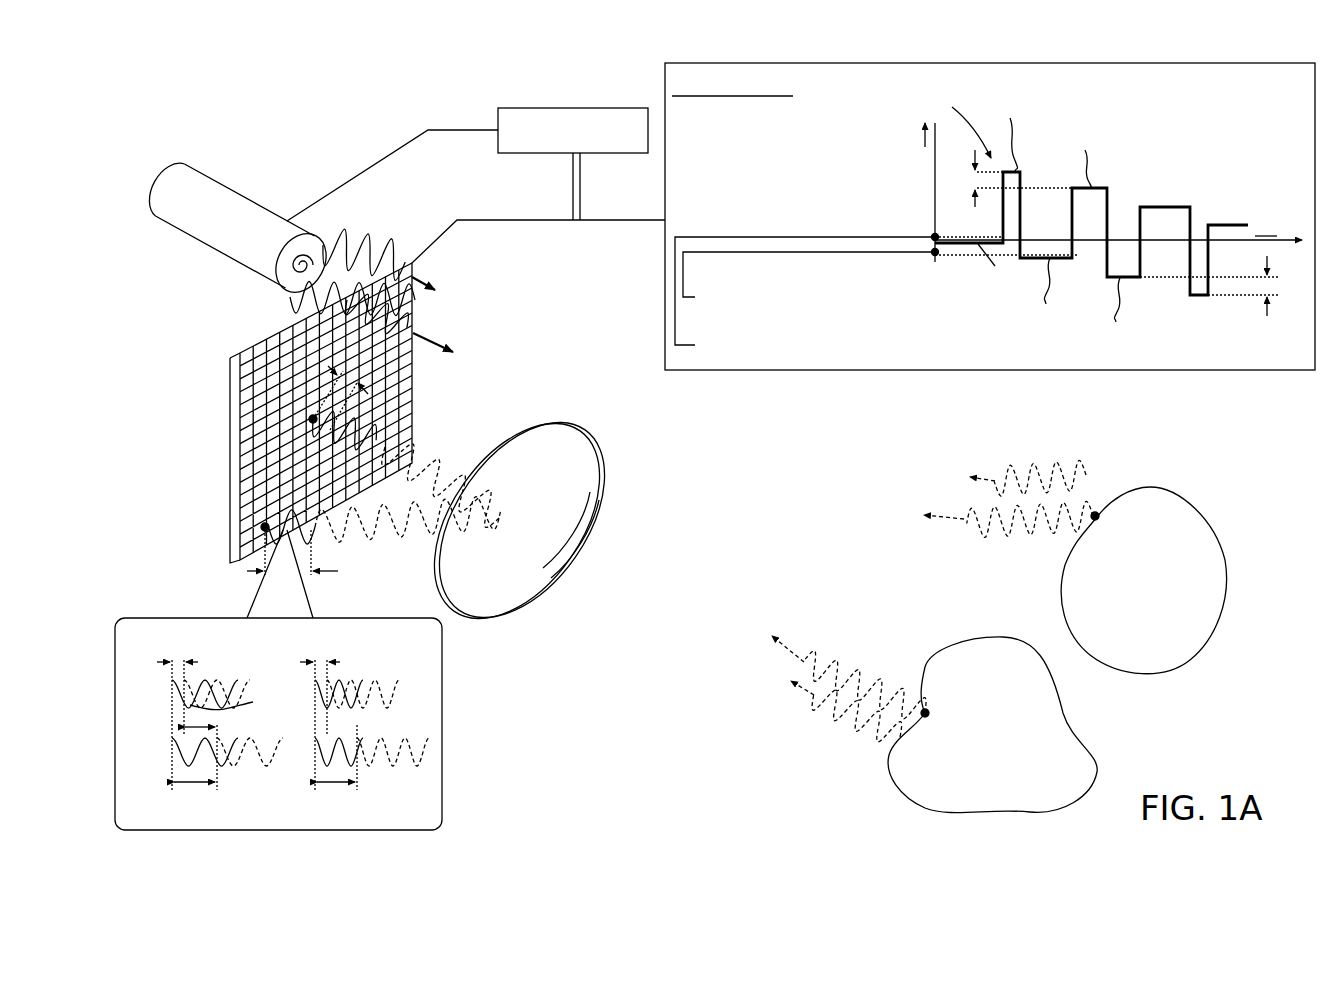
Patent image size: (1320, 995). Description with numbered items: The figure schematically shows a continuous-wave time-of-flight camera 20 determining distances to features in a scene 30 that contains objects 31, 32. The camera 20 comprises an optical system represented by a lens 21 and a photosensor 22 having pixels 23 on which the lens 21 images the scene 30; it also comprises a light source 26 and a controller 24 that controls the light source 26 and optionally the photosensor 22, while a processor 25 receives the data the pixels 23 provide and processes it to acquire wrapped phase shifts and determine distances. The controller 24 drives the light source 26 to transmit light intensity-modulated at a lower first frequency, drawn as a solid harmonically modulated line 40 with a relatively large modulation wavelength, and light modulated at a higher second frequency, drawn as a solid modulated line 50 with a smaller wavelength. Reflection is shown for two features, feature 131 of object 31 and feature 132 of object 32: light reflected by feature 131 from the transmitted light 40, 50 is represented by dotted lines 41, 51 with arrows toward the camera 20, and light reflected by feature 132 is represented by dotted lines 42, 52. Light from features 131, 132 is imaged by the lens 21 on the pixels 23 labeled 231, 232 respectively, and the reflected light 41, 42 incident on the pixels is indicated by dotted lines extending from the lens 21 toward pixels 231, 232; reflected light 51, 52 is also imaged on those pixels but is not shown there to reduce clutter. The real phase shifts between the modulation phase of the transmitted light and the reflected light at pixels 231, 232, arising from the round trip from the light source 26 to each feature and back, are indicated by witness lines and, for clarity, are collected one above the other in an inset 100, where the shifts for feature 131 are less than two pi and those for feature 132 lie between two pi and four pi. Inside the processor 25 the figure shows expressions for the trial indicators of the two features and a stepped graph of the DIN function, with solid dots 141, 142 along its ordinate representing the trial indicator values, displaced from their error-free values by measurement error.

The CW-TOF camera 20 is at (160, 128).
The light source 26 is at (240, 193).
The controller 24 is at (570, 108).
The processor 25 is at (665, 262).
The photosensor 22 is at (263, 413).
The pixels 23 is at (240, 360).
The pixel 231 is at (313, 419).
The pixel 232 is at (265, 527).
The transmitted light modulated at frequency f1 40 is at (415, 310).
The transmitted light modulated at frequency f2 50 is at (397, 260).
The reflected light from feature 131 at frequency f1 41 is at (433, 467).
The reflected light from feature 132 at frequency f1 42 is at (417, 543).
The reflected light from feature 131 at frequency f2 51 is at (372, 670).
The reflected light from feature 132 at frequency f2 52 is at (407, 773).
The lens 21 is at (520, 612).
The inset 100 is at (480, 762).
The solid dot representing trial indicator x12(132) 142 is at (935, 237).
The solid dot representing trial indicator x12(131) 141 is at (935, 253).
The scene 30 is at (876, 485).
The object 31 is at (1002, 741).
The object 32 is at (1160, 592).
The feature 131 is at (925, 713).
The feature 132 is at (1095, 510).